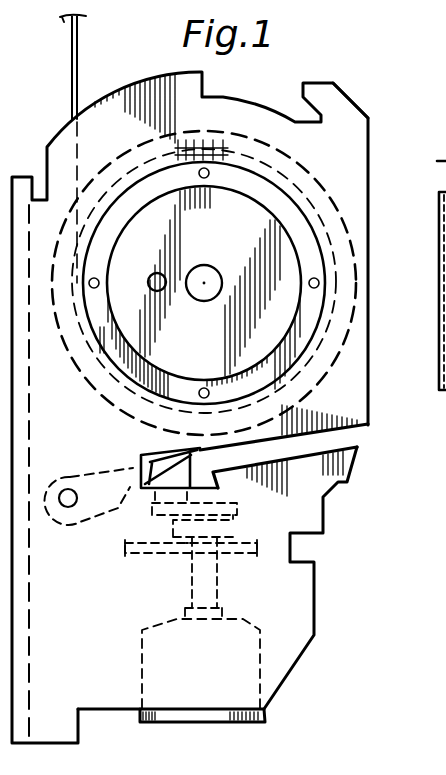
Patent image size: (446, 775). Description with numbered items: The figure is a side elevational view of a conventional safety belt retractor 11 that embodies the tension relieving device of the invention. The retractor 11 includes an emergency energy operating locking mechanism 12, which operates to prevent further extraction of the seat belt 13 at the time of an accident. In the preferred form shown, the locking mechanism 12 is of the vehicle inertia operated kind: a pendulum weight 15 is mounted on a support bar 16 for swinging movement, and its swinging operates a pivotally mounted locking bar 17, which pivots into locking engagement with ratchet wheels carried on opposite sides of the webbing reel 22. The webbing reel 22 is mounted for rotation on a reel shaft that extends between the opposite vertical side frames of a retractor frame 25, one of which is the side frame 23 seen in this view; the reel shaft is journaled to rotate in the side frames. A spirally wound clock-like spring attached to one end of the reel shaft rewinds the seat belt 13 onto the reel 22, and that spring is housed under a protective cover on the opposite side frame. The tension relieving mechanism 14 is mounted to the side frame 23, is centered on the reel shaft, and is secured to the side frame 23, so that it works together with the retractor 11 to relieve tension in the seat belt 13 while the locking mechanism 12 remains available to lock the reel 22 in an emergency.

The safety belt retractor 11 is at (346, 81).
The emergency energy operating locking mechanism 12 is at (288, 567).
The seat belt 13 is at (78, 38).
The tension relieving mechanism 14 is at (320, 163).
The pendulum weight 15 is at (262, 714).
The support bar 16 is at (239, 563).
The locking bar 17 is at (138, 464).
The webbing reel 22 is at (328, 192).
The side frame 23 is at (353, 115).
The retractor frame 25 is at (365, 433).